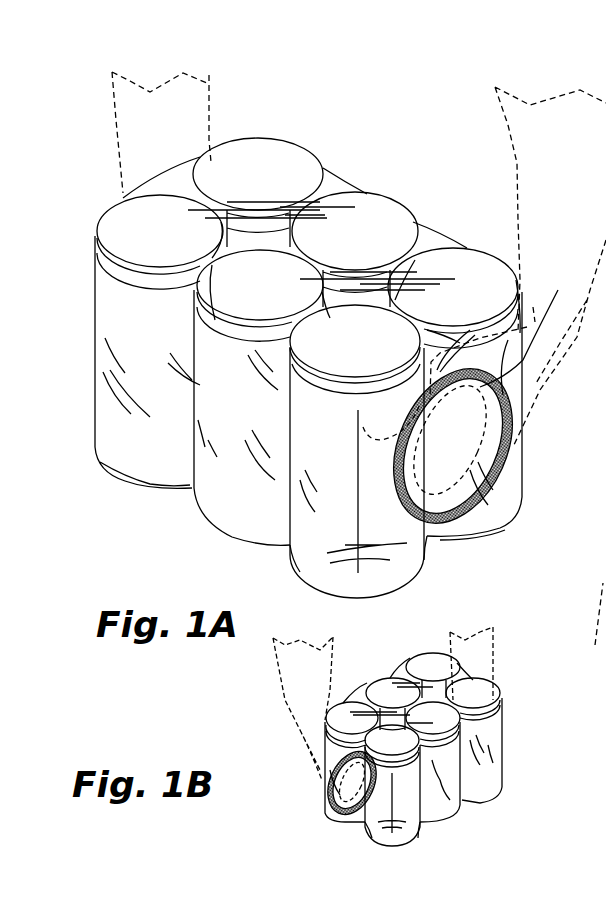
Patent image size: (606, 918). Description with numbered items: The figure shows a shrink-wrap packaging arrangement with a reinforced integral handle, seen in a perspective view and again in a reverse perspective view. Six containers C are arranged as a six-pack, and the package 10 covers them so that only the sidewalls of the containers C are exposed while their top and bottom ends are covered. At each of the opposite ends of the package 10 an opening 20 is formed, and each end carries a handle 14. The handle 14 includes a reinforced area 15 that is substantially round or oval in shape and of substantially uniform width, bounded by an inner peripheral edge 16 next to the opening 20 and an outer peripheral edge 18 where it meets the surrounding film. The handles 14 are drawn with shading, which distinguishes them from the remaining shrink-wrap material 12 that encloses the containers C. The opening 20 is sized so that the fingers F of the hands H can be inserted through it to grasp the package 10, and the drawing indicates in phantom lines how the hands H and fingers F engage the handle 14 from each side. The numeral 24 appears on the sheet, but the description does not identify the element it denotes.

In FIG. 1A, the package 10 is at (452, 224).
In FIG. 1B, the package 10 is at (418, 640).
In FIG. 1A, the shrink-wrap material 12 is at (430, 247).
In FIG. 1B, the shrink-wrap material 12 is at (465, 802).
In FIG. 1A, the handle 14 is at (483, 502).
In FIG. 1B, the handle 14 is at (332, 803).
In FIG. 1A, the reinforced area 15 is at (528, 326).
In FIG. 1A, the inner peripheral edge 16 is at (503, 401).
In FIG. 1A, the outer peripheral edge 18 is at (493, 480).
In FIG. 1A, the opening 20 is at (453, 487).
In FIG. 1B, the opening 20 is at (360, 778).
In FIG. 1A, the hand line 24 is at (587, 629).
In FIG. 1A, the container C is at (258, 168).
In FIG. 1B, the container C is at (385, 692).
In FIG. 1A, the hand H is at (567, 330).
In FIG. 1B, the hand H is at (290, 720).
In FIG. 1A, the finger F is at (413, 467).